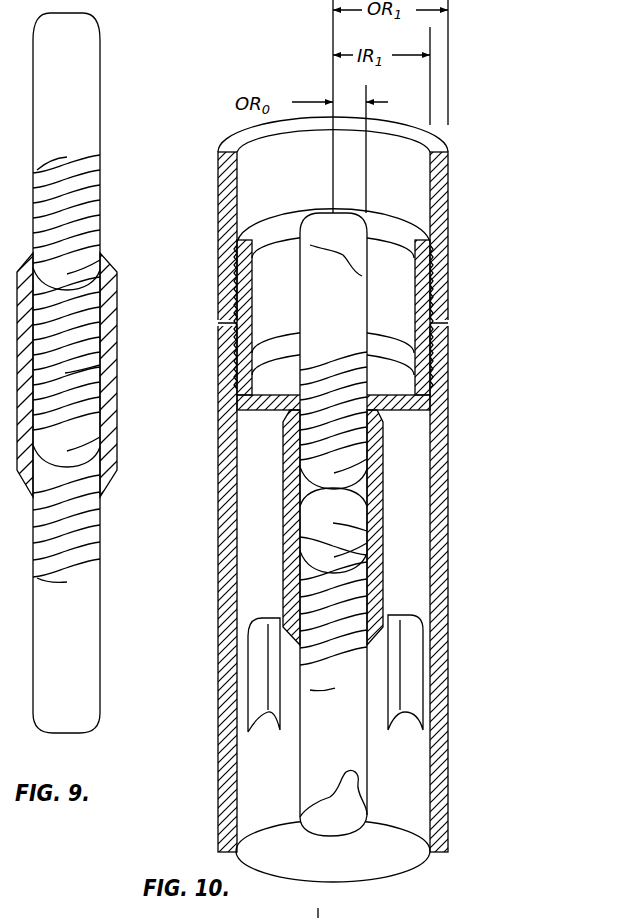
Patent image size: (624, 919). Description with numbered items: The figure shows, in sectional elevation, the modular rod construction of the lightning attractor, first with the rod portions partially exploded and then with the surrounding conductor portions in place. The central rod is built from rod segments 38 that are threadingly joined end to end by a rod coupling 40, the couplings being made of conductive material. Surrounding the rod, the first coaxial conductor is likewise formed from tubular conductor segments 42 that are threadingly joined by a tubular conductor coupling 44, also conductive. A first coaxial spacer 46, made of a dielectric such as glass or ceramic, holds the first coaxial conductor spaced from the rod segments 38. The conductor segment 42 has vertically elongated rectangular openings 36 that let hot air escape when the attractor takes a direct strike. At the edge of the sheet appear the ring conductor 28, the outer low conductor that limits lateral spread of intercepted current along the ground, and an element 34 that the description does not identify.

In FIG. 10, the openings 36 is at (417, 637).
In FIG. 9, the rod segments 38 is at (95, 121).
In FIG. 10, the rod segments 38 is at (353, 307).
In FIG. 9, the rod couplings 40 is at (110, 347).
In FIG. 10, the rod couplings 40 is at (373, 450).
In FIG. 10, the conductor segments 42 is at (448, 236).
In FIG. 10, the tubular conductor couplings 44 is at (377, 227).
In FIG. 10, the first coaxial spacers 46 is at (263, 415).
In FIG. 9, the ring conductor 28 is at (0, 893).
In FIG. 9, the element 34 (adjacent figure) 34 is at (20, 918).